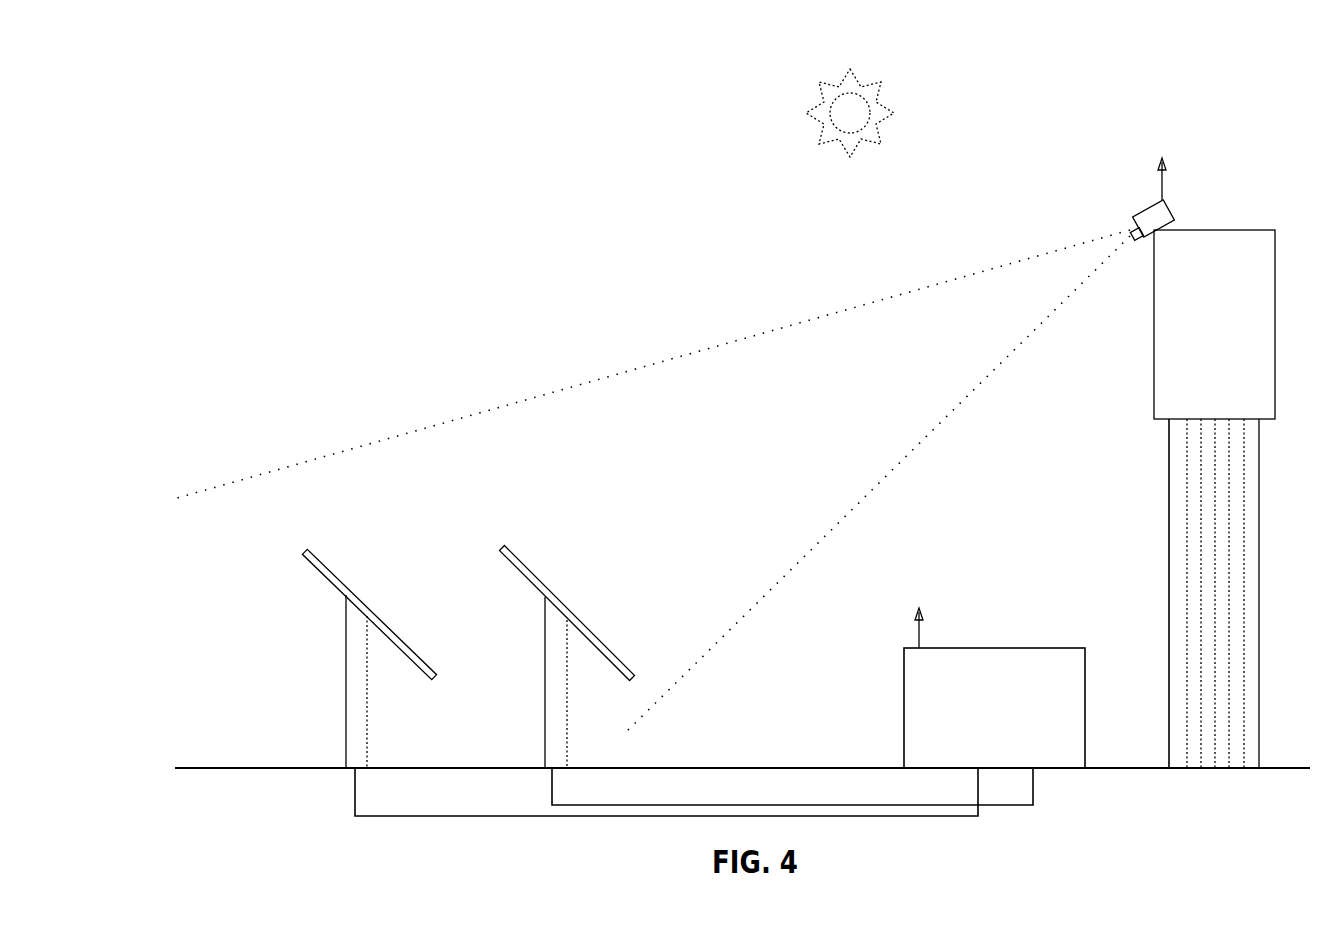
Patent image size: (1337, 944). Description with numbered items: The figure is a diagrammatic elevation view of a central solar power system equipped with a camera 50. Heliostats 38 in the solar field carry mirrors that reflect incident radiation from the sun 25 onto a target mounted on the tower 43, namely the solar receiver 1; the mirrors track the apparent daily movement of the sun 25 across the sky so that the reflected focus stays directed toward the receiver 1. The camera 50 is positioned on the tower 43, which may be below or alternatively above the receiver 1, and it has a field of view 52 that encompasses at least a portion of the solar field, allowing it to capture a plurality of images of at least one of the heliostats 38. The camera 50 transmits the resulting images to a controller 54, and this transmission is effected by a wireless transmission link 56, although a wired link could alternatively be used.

The solar receiver 1 is at (1214, 324).
The sun 25 is at (852, 112).
The heliostat 38 is at (335, 633).
The tower 43 is at (1244, 521).
The camera 50 is at (1137, 212).
The field of view 52 is at (633, 366).
The controller 54 is at (1025, 647).
The wireless transmission link 56 is at (1165, 160).